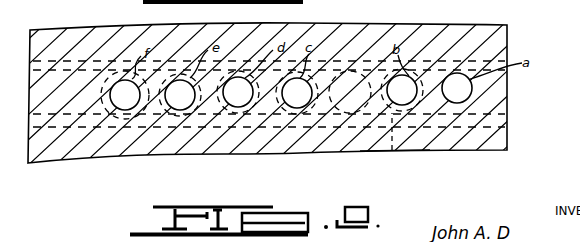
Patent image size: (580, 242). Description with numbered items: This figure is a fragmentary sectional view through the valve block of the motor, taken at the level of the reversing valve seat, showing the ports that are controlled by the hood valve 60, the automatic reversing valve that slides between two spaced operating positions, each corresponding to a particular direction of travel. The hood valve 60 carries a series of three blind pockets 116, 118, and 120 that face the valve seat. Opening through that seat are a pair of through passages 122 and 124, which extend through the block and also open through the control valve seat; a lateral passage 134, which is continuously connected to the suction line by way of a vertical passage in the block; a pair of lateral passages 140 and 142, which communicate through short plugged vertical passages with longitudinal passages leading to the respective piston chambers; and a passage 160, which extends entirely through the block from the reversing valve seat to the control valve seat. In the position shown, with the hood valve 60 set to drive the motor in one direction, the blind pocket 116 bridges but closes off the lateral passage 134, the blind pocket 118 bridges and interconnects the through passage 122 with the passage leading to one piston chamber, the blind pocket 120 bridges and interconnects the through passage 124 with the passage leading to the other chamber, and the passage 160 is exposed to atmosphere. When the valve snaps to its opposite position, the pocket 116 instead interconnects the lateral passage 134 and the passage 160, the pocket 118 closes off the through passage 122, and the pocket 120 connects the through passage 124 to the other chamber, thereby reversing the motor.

The hood valve 60 is at (323, 118).
The blind pocket 116 is at (392, 152).
The blind pocket 118 is at (262, 112).
The blind pocket 120 is at (147, 117).
The through passage 122 is at (300, 78).
The through passage 124 is at (181, 80).
The lateral passage 134 is at (416, 84).
The lateral passage 140 is at (120, 81).
The lateral passage 142 is at (243, 78).
The passage 160 is at (468, 91).